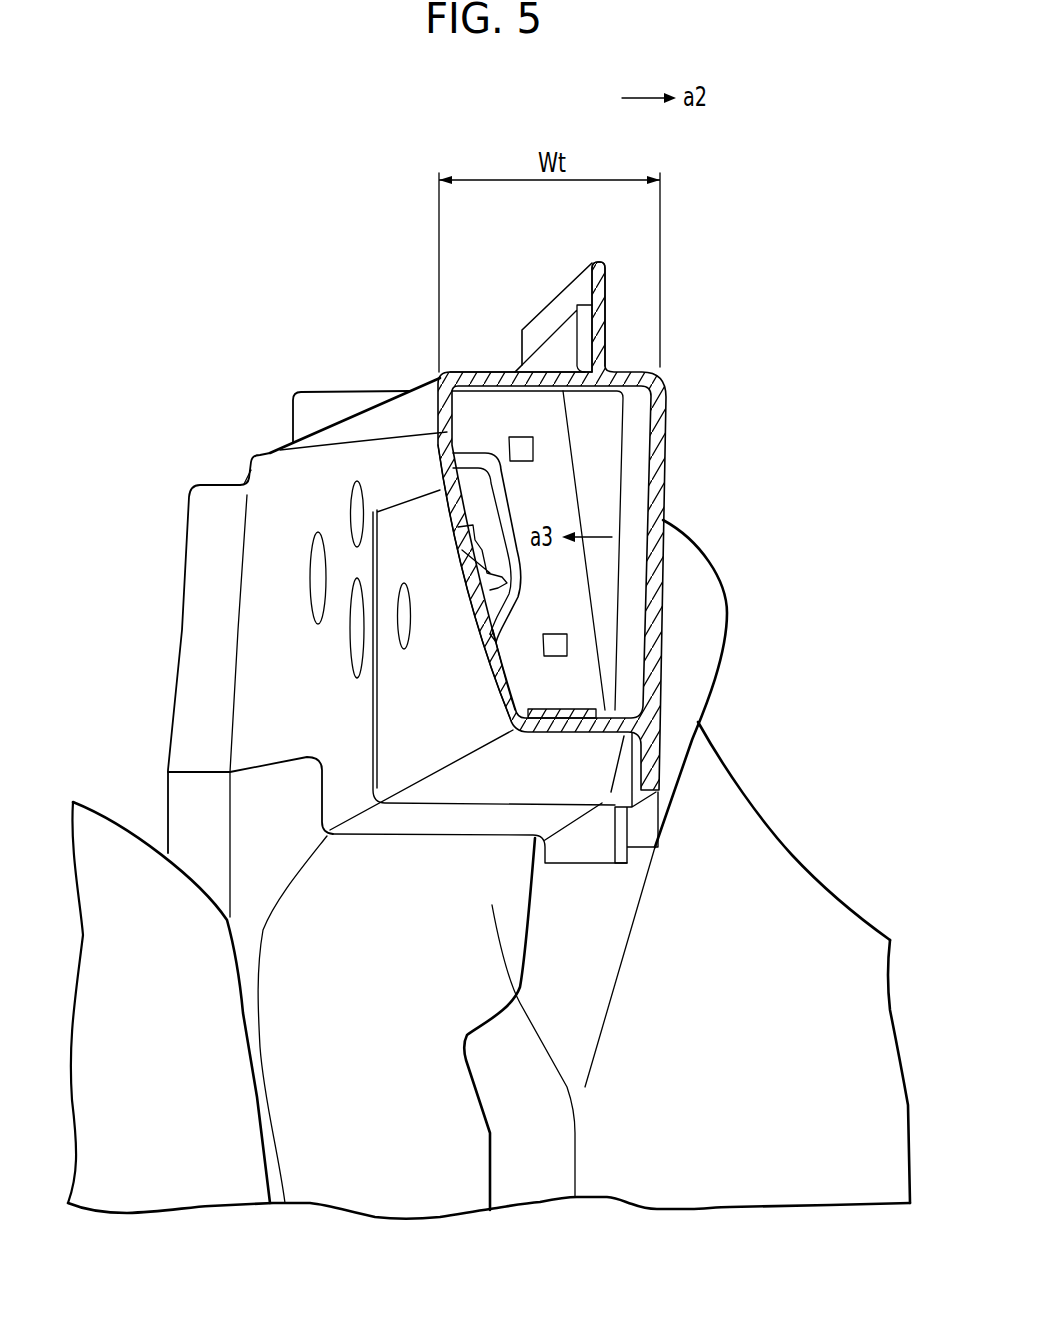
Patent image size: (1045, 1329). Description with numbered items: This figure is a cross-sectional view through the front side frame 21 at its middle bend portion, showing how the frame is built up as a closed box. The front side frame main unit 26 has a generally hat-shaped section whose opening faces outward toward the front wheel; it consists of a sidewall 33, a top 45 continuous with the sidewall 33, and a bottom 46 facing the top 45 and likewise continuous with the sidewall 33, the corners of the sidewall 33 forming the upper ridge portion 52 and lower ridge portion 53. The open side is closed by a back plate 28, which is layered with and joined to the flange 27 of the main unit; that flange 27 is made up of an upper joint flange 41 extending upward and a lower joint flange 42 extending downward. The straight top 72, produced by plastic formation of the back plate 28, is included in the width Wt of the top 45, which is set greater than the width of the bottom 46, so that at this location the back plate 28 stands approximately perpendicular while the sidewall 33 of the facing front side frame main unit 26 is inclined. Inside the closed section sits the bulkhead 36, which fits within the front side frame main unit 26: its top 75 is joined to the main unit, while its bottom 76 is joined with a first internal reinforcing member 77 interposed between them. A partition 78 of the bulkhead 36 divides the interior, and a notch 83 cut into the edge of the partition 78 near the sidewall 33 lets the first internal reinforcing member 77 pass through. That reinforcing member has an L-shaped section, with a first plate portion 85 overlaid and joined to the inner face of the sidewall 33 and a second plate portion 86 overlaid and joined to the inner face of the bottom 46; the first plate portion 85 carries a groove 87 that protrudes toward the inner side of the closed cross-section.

The front side frame 21 is at (419, 277).
The front side frame main unit 26 is at (352, 435).
The flange 27 is at (550, 343).
The upper joint flange 41 is at (557, 303).
The back plate 28 is at (666, 420).
The sidewall 33 is at (398, 464).
The bulkhead 36 is at (572, 452).
The lower joint flange 42 is at (627, 807).
The top 45 is at (485, 371).
The bottom 46 is at (530, 765).
The upper ridge portion 52 is at (432, 395).
The lower ridge portion 53 is at (460, 755).
The straight top 72 is at (605, 257).
The top 75 is at (270, 453).
The bottom 76 is at (563, 668).
The first internal reinforcing member 77 is at (495, 597).
The partition 78 is at (565, 578).
The notch 83 is at (505, 513).
The first plate portion 85 is at (513, 655).
The second plate portion 86 is at (575, 696).
The groove 87 is at (503, 572).